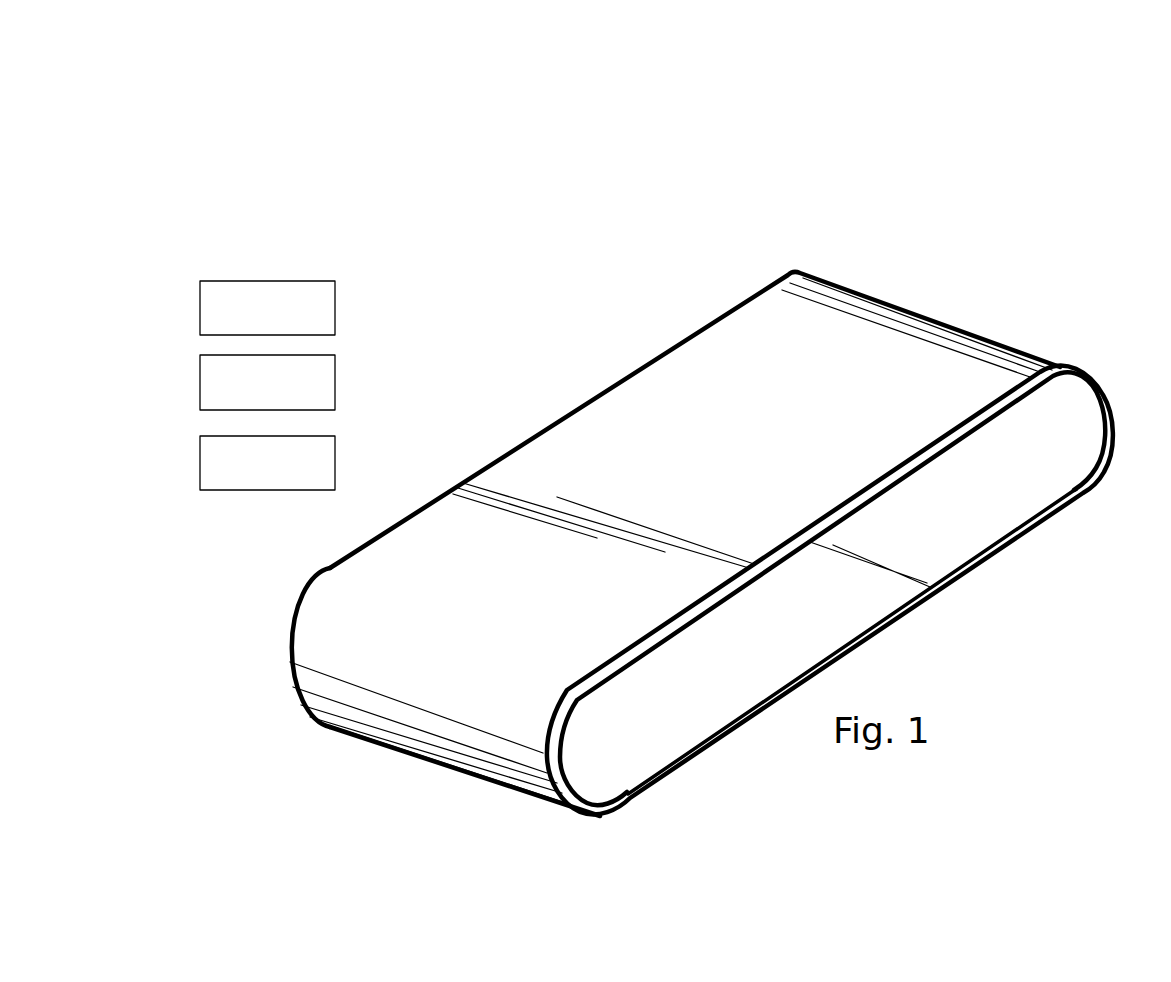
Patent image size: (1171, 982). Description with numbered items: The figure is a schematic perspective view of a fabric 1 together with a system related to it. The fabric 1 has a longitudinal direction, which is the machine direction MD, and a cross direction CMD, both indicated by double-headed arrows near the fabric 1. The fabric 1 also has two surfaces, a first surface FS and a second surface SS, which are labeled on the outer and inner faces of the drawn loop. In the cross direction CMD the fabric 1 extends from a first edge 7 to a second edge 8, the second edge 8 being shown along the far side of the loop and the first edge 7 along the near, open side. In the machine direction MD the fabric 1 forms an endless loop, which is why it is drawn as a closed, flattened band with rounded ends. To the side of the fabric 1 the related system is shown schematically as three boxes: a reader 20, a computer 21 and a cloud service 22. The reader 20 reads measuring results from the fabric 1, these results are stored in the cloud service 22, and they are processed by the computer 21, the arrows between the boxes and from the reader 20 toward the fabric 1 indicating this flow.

The fabric 1 is at (1062, 266).
The first edge 7 is at (842, 494).
The second edge 8 is at (695, 333).
The first surface FS is at (652, 422).
The second surface SS is at (867, 590).
The longitudinal direction (machine direction) MD is at (570, 373).
The cross direction CMD is at (865, 256).
The reader 20 is at (572, 326).
The computer 21 is at (193, 290).
The cloud service 22 is at (196, 374).